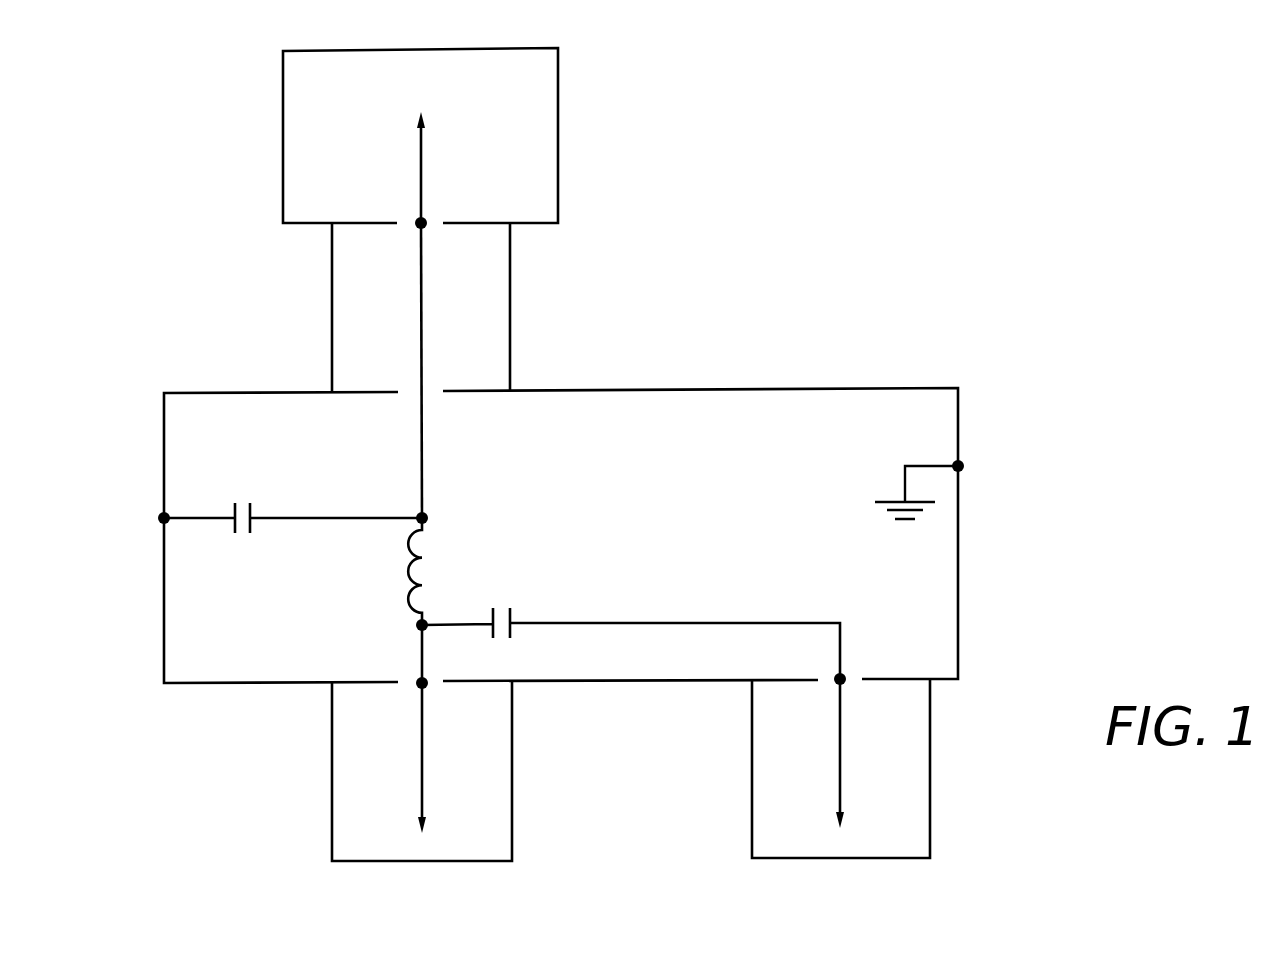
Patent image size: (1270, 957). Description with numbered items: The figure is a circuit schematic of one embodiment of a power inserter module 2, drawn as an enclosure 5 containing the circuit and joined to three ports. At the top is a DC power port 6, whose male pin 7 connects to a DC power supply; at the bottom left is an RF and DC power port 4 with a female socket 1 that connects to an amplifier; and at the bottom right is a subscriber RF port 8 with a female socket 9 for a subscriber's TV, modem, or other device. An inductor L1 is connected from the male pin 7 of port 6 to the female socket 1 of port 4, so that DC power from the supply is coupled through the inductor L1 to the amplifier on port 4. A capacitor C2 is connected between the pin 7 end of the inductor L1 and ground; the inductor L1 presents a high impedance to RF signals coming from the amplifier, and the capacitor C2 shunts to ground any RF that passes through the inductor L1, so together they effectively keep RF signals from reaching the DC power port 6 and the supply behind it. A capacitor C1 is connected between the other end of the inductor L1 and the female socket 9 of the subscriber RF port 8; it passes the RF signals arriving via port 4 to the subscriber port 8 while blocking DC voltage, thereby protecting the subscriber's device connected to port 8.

The female socket 1 is at (422, 782).
The power inserter module 2 is at (737, 508).
The RF and DC power port 4 is at (512, 758).
The circuit network 5 is at (805, 388).
The DC power port 6 is at (558, 182).
The male pin 7 is at (421, 162).
The subscriber RF port 8 is at (930, 767).
The female socket 9 is at (841, 775).
The capacitor C1 is at (502, 608).
The capacitor C2 is at (245, 502).
The inductor L1 is at (436, 571).